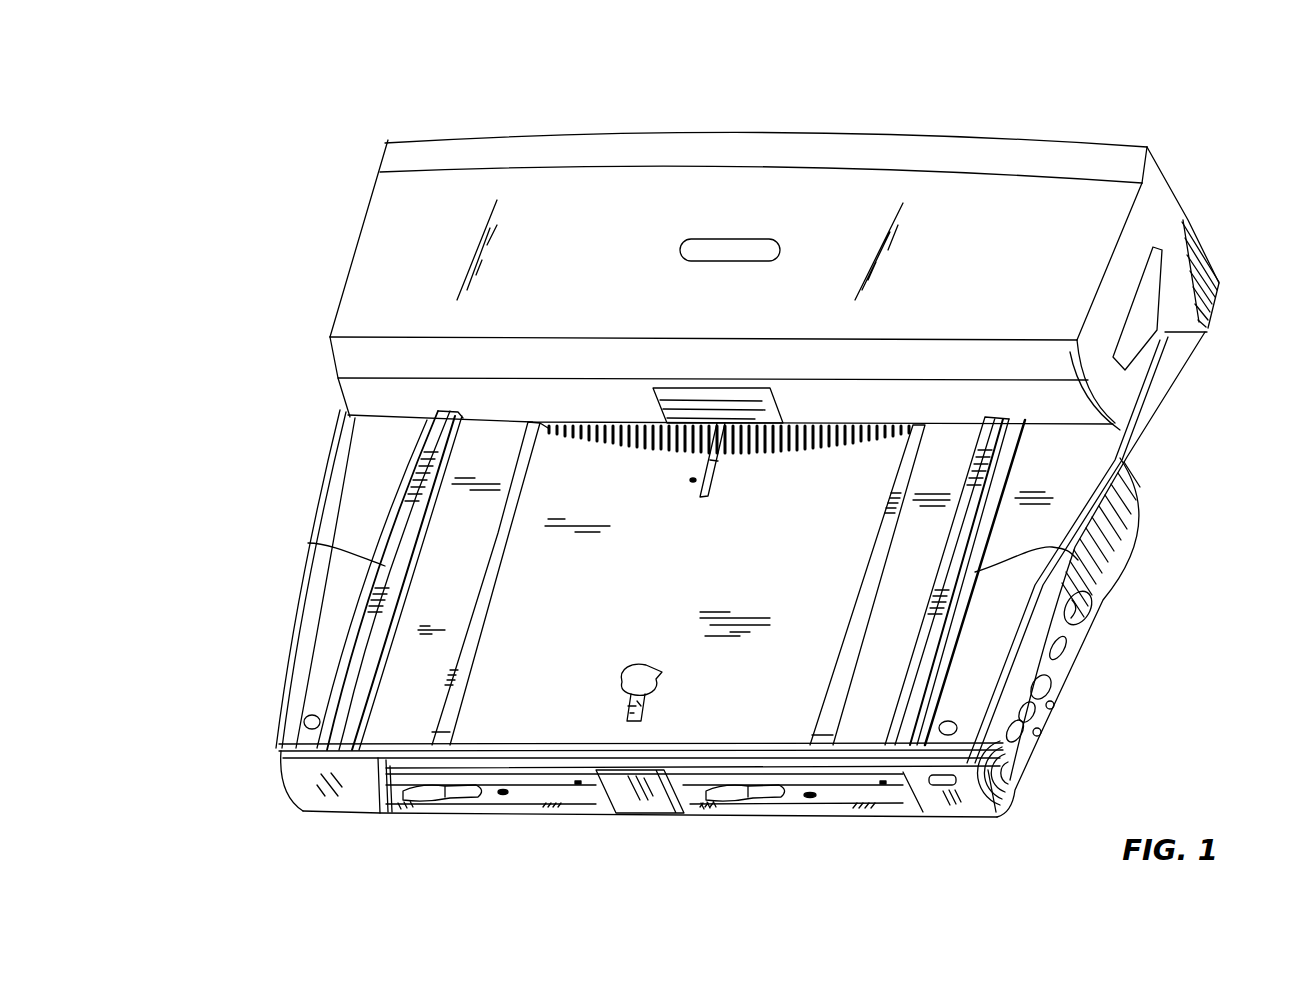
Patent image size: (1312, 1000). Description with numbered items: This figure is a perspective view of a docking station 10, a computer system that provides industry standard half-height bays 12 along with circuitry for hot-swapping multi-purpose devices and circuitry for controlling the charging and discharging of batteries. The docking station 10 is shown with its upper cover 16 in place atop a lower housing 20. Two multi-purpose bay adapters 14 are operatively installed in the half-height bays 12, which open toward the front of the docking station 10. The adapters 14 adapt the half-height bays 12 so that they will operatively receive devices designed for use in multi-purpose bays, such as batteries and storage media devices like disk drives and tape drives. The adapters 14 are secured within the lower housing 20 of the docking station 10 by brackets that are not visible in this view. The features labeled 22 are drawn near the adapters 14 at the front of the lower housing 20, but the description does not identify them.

The docking station 10 is at (1221, 142).
The half-height bays 12 is at (597, 793).
The multi-purpose bay adapters 14 is at (517, 793).
The upper cover 16 is at (1052, 584).
The lower housing 20 is at (285, 773).
The latch 22 is at (390, 793).